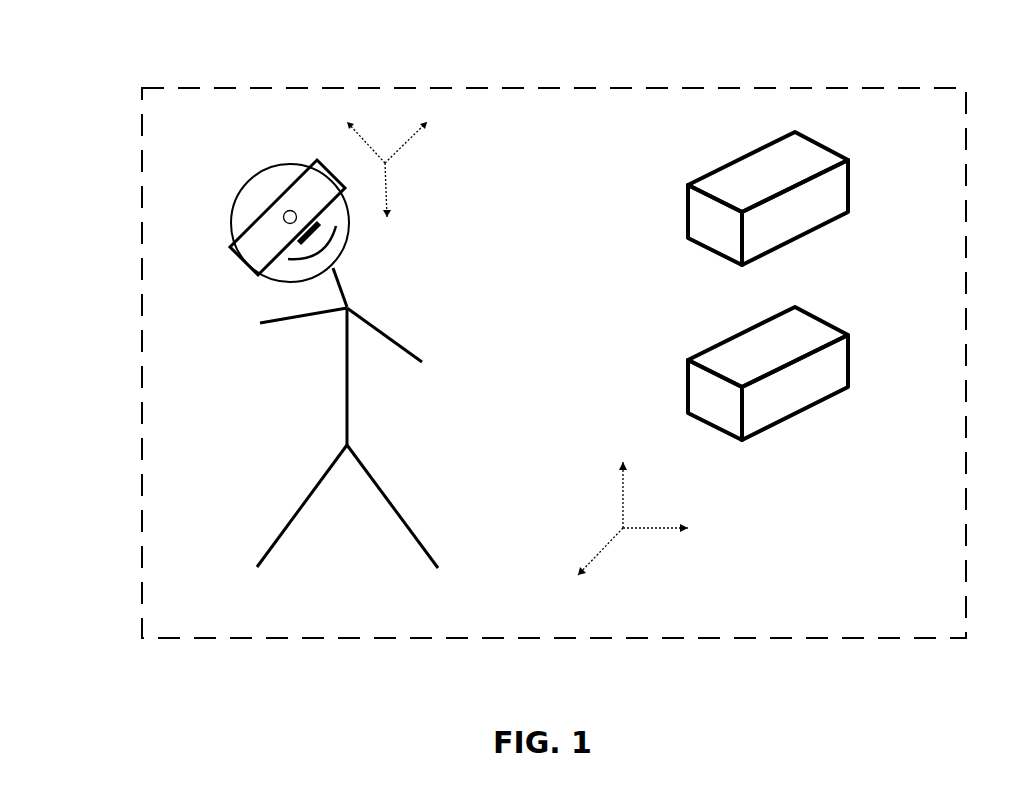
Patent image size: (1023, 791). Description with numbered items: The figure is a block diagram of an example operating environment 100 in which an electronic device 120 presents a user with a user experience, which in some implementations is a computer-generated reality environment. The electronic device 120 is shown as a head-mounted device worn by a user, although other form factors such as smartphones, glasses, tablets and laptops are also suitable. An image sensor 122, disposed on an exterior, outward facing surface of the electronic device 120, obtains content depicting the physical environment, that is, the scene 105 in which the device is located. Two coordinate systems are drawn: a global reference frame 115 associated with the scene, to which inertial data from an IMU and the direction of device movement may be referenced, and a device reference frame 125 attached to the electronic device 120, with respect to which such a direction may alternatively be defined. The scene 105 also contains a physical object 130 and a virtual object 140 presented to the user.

The operating environment 100 is at (106, 62).
The scene 105 is at (554, 363).
The global reference frame 115 is at (627, 530).
The electronic device 120 is at (246, 276).
The image sensor 122 is at (283, 218).
The device reference frame 125 is at (388, 168).
The physical object 130 is at (768, 198).
The virtual object 140 is at (768, 373).